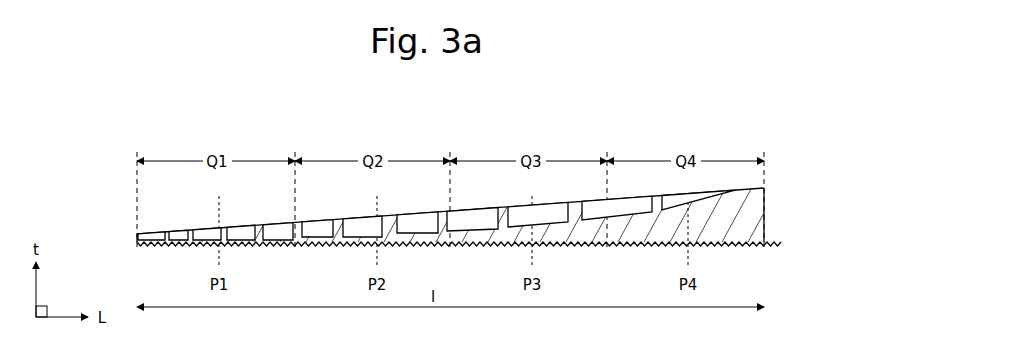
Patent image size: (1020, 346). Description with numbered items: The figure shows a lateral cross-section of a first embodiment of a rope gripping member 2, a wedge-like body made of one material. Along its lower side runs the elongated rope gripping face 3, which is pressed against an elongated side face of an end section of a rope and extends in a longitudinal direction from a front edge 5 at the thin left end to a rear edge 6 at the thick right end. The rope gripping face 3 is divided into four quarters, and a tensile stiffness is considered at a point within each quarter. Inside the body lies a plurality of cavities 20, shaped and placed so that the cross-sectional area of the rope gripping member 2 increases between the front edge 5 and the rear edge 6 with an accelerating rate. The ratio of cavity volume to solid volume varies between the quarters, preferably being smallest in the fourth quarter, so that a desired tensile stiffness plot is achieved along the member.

The rope gripping member 2 is at (452, 167).
The rope gripping face 3 is at (352, 246).
The front edge 5 is at (137, 243).
The rear edge 6 is at (764, 243).
The cavities 20 is at (207, 230).